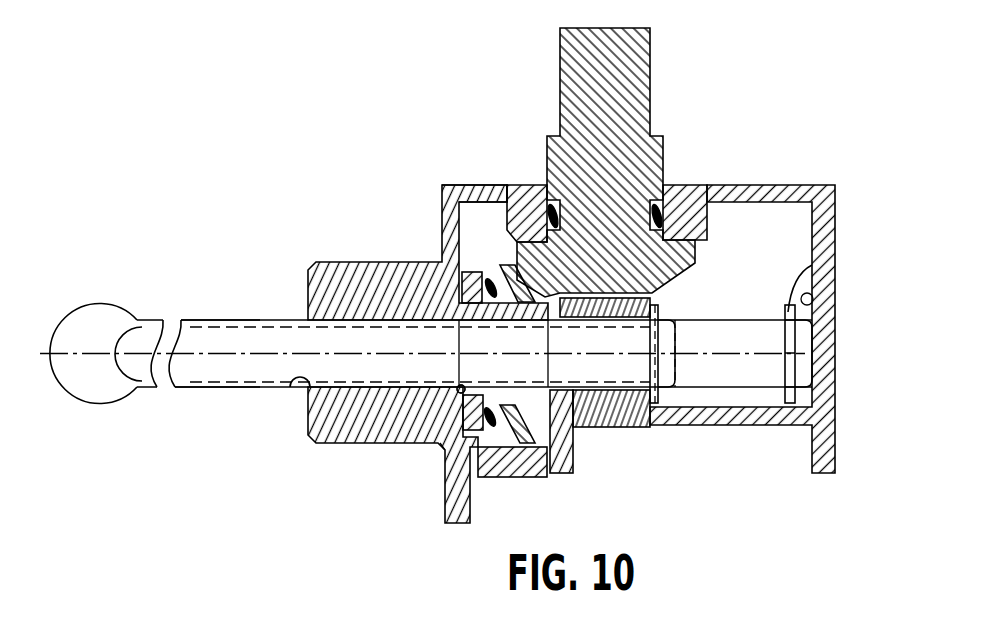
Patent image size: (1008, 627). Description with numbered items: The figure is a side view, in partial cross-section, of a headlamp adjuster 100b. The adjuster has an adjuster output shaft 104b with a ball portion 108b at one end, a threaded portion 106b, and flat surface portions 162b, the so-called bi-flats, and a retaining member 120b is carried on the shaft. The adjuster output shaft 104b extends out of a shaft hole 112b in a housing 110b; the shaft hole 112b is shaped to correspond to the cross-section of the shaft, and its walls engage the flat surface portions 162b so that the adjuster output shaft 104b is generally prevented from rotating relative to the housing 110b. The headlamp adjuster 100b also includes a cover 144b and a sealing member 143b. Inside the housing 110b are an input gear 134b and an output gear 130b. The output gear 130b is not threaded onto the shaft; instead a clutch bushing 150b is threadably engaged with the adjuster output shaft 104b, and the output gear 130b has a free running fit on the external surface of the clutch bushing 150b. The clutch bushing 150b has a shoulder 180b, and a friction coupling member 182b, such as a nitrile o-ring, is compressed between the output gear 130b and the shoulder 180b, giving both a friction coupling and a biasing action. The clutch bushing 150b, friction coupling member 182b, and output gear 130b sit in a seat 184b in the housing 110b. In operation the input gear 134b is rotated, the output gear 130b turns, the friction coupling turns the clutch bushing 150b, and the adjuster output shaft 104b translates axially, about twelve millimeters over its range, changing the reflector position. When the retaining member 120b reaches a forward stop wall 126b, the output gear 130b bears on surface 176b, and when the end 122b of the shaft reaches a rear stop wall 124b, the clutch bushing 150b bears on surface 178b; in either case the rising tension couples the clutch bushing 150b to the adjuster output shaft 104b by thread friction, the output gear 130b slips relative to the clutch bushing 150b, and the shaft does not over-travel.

The headlamp adjuster 100b is at (425, 470).
The adjuster output shaft 104b is at (210, 395).
The threaded portion 106b is at (397, 280).
The ball portion 108b is at (100, 327).
The housing 110b is at (633, 470).
The shaft hole 112b is at (298, 390).
The retaining member 120b is at (793, 307).
The end of adjuster output shaft 122b is at (808, 353).
The rear stop wall 124b is at (813, 298).
The forward stop wall 126b is at (655, 392).
The output gear 130b is at (511, 450).
The input gear 134b is at (702, 250).
The sealing member 143b is at (690, 205).
The cover 144b is at (458, 184).
The clutch bushing 150b is at (476, 264).
The flat surface portions 162b is at (200, 328).
The surface 176b is at (543, 420).
The surface 178b is at (455, 393).
The shoulder 180b is at (460, 393).
The friction coupling member 182b is at (497, 280).
The seat 184b is at (533, 443).